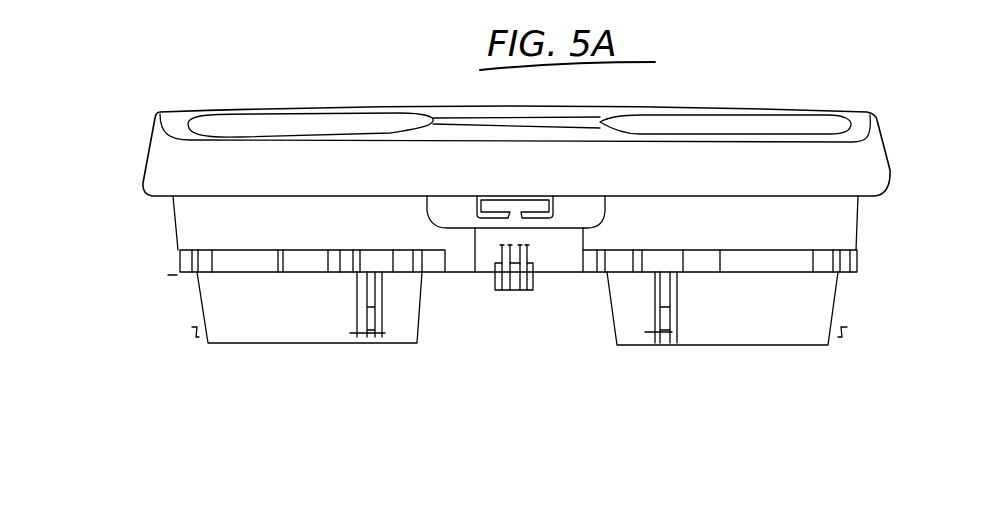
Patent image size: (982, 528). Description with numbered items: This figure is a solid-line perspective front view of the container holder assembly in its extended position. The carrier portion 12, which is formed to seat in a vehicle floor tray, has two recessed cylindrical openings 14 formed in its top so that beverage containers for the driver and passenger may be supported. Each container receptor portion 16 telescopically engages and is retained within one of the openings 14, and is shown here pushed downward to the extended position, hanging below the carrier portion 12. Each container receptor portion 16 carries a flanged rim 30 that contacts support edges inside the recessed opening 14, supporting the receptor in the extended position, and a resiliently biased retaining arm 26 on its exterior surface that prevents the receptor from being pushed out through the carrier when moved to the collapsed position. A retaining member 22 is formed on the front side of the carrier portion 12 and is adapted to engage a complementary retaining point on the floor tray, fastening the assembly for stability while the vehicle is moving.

The carrier portion 12 is at (180, 167).
The recessed opening 14 is at (178, 237).
The container receptor portion 16 is at (267, 335).
The retaining member 22 is at (475, 272).
The retaining arm 26 is at (360, 345).
The flanged rim 30 is at (343, 262).